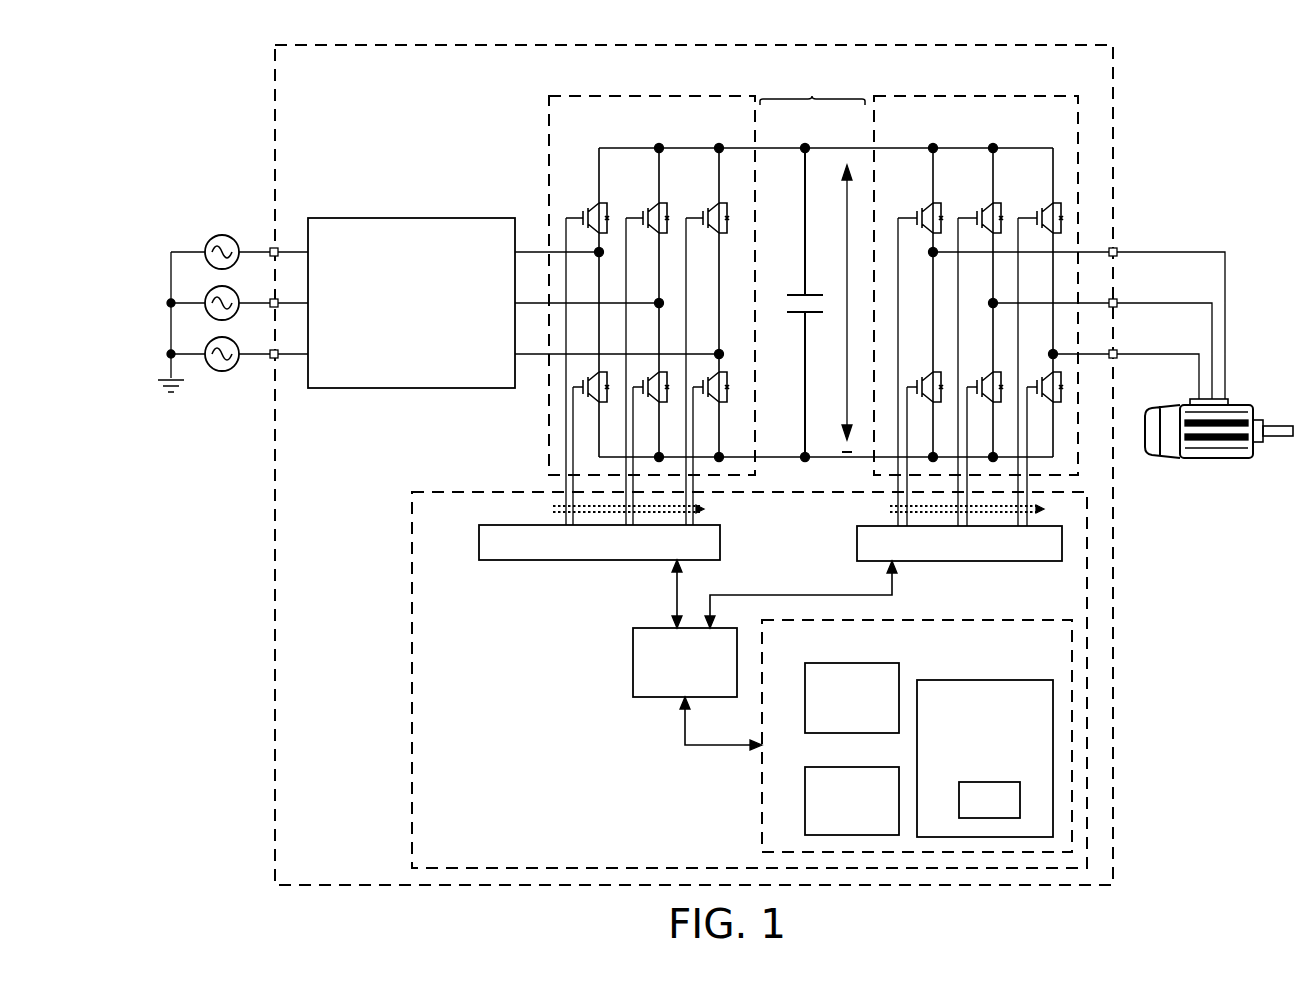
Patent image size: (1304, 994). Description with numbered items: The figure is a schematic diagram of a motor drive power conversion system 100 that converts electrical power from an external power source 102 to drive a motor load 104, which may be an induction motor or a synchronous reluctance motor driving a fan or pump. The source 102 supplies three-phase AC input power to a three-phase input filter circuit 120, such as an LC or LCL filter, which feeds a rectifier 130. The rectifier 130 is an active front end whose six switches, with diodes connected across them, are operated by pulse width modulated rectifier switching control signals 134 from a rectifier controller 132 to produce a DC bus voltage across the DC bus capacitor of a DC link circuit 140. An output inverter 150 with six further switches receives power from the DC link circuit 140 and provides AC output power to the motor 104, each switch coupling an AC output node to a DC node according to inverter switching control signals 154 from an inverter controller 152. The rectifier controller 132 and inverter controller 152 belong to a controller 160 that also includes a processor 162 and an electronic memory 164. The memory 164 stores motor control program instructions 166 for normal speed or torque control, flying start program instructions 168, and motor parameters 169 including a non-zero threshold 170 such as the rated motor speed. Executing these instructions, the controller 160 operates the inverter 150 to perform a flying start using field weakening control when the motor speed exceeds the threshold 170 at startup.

The motor drive power conversion system 100 is at (342, 45).
The external power source 102 is at (201, 232).
The motor load 104 is at (1244, 403).
The three-phase input filter circuit 120 is at (410, 218).
The rectifier 130 is at (650, 96).
The rectifier controller 132 is at (479, 549).
The rectifier switching control signals 134 is at (553, 510).
The DC link circuit 140 is at (812, 94).
The output inverter 150 is at (976, 96).
The inverter controller 152 is at (855, 549).
The inverter switching control signals 154 is at (891, 510).
The controller 160 is at (412, 847).
The processor 162 is at (659, 628).
The electronic memory 164 is at (915, 620).
The motor control program instructions 166 is at (819, 663).
The flying start program instructions 168 is at (819, 767).
The motor parameters 169 is at (981, 680).
The non-zero threshold 170 is at (985, 782).